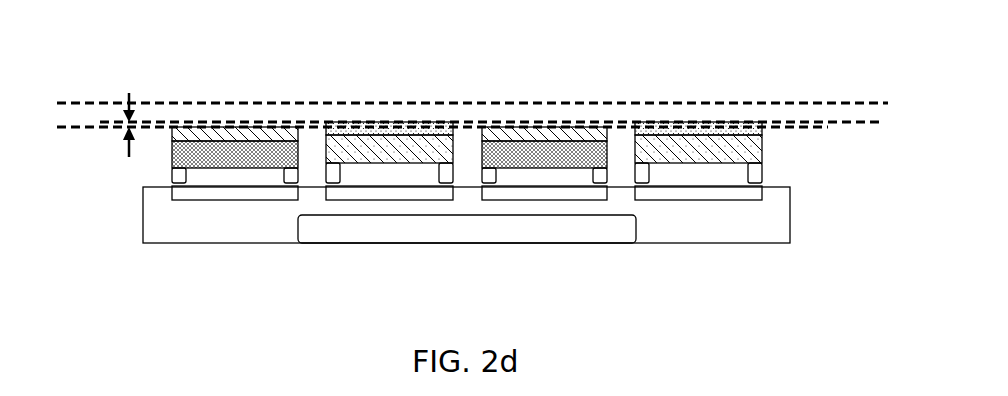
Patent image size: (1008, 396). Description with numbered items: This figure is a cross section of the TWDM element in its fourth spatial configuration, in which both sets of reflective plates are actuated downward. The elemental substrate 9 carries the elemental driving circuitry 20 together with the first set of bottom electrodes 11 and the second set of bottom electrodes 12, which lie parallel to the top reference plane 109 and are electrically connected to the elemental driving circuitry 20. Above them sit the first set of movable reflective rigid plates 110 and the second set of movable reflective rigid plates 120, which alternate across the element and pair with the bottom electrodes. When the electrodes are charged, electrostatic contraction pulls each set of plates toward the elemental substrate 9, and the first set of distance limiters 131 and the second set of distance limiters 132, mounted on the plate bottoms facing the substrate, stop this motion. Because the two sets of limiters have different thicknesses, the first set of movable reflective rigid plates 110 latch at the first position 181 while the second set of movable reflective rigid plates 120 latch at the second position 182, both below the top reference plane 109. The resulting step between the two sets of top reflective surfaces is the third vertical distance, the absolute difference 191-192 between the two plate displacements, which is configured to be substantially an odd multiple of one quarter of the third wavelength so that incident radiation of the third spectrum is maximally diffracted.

The elemental substrate 9 is at (143, 237).
The first set of bottom electrodes 11 is at (207, 190).
The second set of bottom electrodes 12 is at (365, 190).
The elemental driving circuitry 20 is at (612, 228).
The first set of movable reflective rigid plates 110 is at (265, 150).
The second set of movable reflective rigid plates 120 is at (398, 143).
The first set of distance limiters 131 is at (172, 175).
The second set of distance limiters 132 is at (762, 175).
The top reference plane 109 is at (863, 103).
The first position 181 is at (77, 128).
The second position 182 is at (857, 123).
The difference between first vertical distance and second vertical distance 191-192 is at (131, 112).